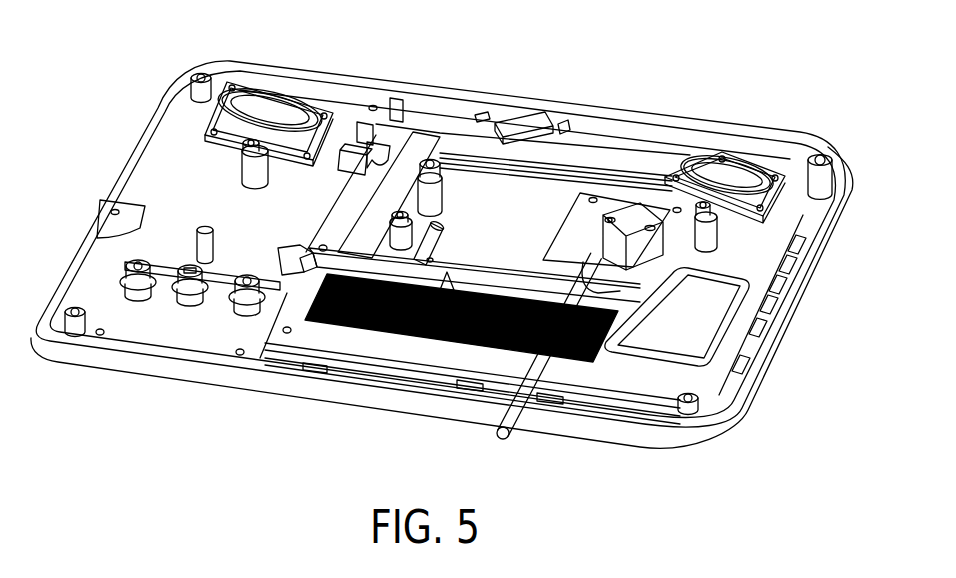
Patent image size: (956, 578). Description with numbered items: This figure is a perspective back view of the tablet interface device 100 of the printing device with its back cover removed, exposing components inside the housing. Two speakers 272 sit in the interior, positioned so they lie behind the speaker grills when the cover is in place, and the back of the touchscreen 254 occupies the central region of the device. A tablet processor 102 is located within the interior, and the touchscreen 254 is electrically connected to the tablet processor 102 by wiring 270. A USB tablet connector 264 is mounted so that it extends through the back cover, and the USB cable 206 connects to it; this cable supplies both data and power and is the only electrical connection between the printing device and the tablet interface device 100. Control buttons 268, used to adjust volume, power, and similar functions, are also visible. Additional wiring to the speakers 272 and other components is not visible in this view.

The tablet interface device 100 is at (818, 279).
The tablet processor 102 is at (381, 345).
The USB cable 206 is at (512, 438).
The touchscreen 254 is at (516, 223).
The USB tablet connector 264 is at (629, 226).
The control buttons 268 is at (243, 320).
The wiring 270 is at (396, 122).
The speakers 272 is at (732, 157).